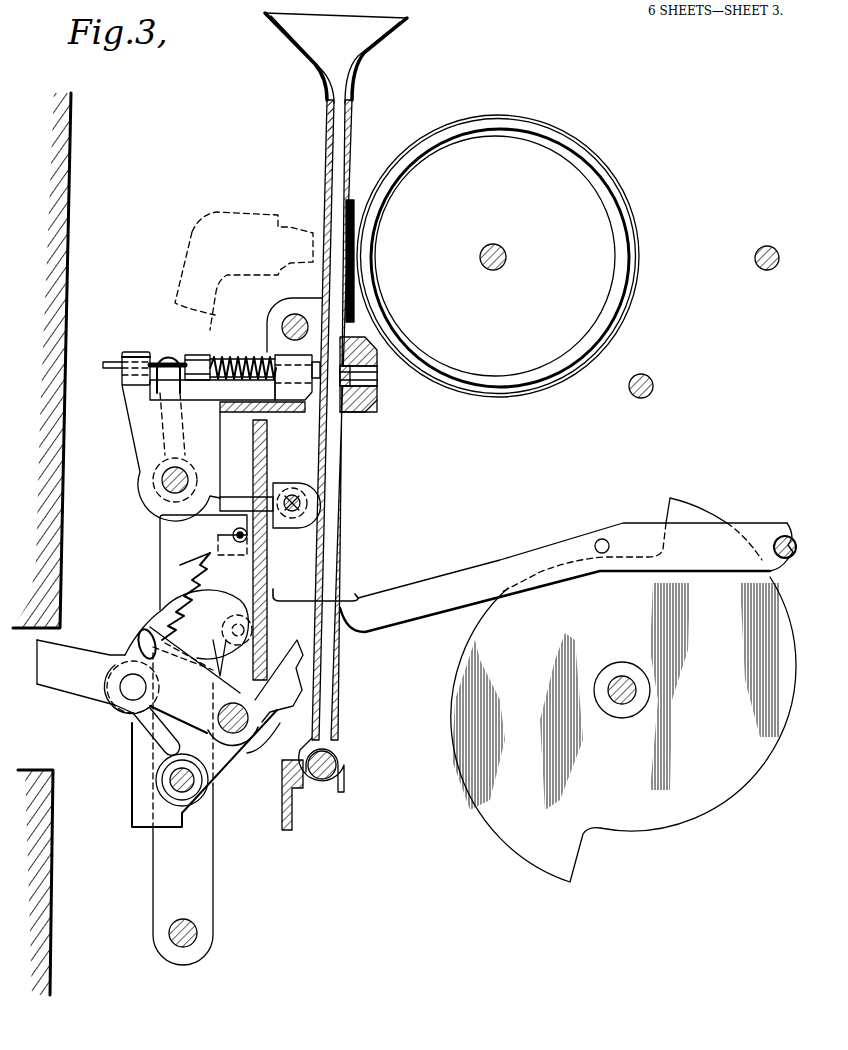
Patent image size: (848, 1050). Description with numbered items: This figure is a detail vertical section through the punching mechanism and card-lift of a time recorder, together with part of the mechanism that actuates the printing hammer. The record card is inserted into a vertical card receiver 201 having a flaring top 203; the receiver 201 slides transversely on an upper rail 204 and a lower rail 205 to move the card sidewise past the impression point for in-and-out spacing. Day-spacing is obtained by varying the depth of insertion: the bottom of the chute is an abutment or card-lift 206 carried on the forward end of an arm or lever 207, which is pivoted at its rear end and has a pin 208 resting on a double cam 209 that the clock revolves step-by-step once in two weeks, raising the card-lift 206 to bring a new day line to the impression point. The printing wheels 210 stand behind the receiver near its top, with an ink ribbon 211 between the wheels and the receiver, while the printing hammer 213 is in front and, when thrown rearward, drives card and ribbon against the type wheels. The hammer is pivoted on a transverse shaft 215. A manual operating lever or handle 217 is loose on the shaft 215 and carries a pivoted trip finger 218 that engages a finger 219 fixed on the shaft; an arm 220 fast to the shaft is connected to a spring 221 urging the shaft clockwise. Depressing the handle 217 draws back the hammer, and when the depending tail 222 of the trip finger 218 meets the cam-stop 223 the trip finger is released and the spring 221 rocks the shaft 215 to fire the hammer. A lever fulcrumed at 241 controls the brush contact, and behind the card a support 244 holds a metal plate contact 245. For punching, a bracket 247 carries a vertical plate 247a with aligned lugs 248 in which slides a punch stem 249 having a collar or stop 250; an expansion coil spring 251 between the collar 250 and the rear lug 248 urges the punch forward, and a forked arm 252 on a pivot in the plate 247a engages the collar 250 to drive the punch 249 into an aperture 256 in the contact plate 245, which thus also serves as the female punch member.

The card receiver 201 is at (327, 114).
The flaring top 203 is at (398, 25).
The upper rail 204 is at (295, 320).
The lower rail 205 is at (322, 776).
The abutment or card-lift 206 is at (340, 597).
The arm or lever 207 is at (500, 562).
The pin 208 is at (606, 540).
The double cam 209 is at (623, 690).
The printing wheels 210 is at (498, 256).
The ink ribbon 211 is at (354, 218).
The printing hammer 213 is at (244, 271).
The shaft 215 is at (236, 735).
The manual operating lever or handle 217 is at (98, 677).
The trip finger 218 is at (232, 605).
The finger 219 is at (262, 675).
The arm 220 is at (215, 690).
The spring 221 is at (185, 565).
The depending tail 222 is at (155, 737).
The cam-stop 223 is at (155, 781).
The fulcrum 241 is at (300, 503).
The support 244 is at (372, 412).
The contact plate 245 is at (365, 412).
The bracket 247 is at (300, 412).
The vertical plate 247a is at (183, 453).
The lugs 248 is at (135, 352).
The punch stem 249 is at (104, 371).
The collar or stop 250 is at (194, 355).
The expansion coil spring 251 is at (250, 358).
The arm 252 is at (172, 360).
The aperture 256 is at (377, 377).